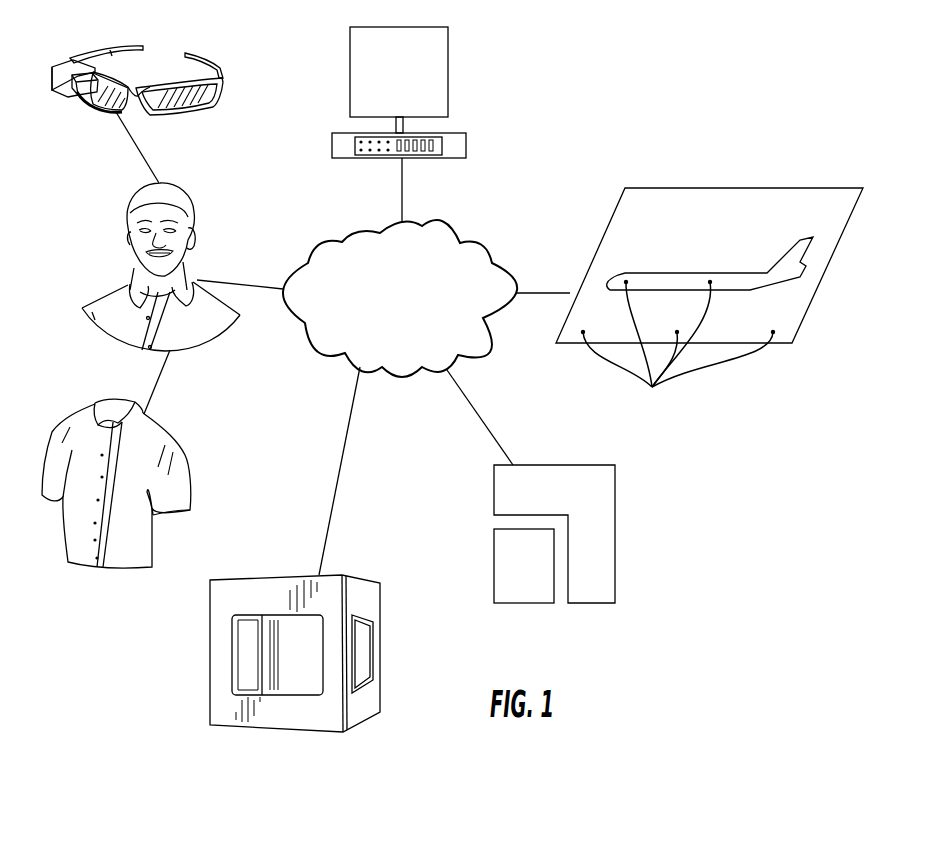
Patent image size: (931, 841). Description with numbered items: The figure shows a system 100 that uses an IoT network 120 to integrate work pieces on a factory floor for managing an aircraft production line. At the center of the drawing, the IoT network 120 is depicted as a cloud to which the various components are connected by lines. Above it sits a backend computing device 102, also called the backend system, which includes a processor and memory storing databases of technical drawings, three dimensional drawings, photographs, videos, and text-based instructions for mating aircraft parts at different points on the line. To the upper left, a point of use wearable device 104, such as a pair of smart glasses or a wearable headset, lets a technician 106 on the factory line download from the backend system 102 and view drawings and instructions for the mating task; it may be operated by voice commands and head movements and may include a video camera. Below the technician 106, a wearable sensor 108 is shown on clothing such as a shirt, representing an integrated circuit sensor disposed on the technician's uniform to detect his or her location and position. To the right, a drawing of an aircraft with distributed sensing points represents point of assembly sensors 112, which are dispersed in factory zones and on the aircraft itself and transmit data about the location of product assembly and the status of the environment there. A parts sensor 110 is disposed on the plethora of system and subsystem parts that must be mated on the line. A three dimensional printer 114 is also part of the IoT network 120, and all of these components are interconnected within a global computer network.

The system 100 is at (552, 75).
The backend computing device 102 is at (448, 40).
The point of use wearable device 104 is at (232, 78).
The user 106 is at (161, 267).
The wearable sensor 108 is at (177, 443).
The parts sensor 110 is at (615, 550).
The point of assembly sensor 112 is at (652, 387).
The 3-D printer 114 is at (380, 658).
The IoT network 120 is at (416, 310).